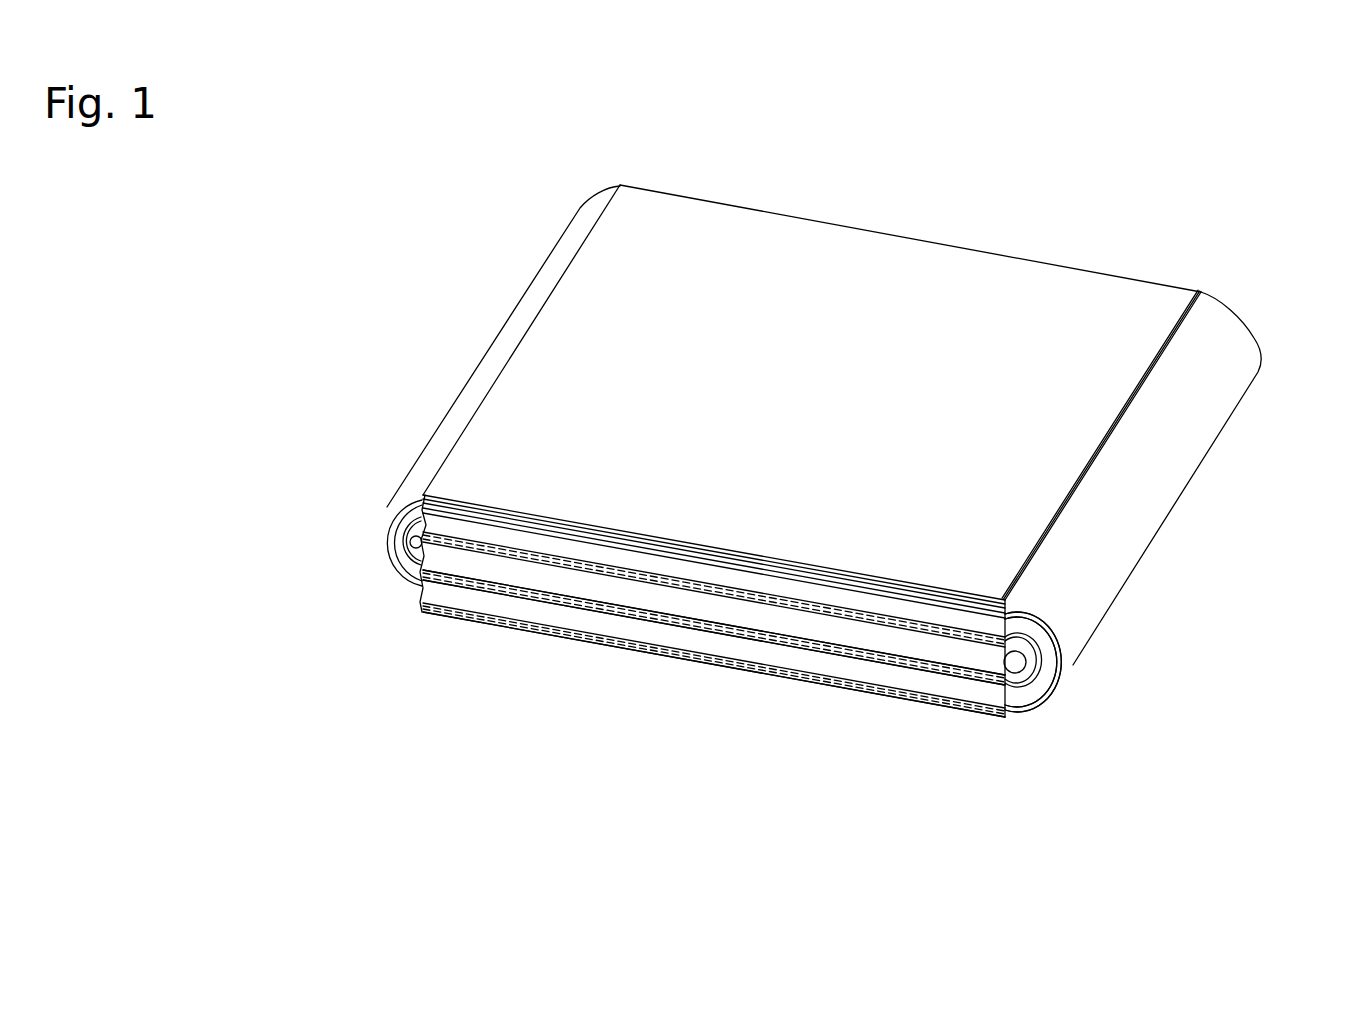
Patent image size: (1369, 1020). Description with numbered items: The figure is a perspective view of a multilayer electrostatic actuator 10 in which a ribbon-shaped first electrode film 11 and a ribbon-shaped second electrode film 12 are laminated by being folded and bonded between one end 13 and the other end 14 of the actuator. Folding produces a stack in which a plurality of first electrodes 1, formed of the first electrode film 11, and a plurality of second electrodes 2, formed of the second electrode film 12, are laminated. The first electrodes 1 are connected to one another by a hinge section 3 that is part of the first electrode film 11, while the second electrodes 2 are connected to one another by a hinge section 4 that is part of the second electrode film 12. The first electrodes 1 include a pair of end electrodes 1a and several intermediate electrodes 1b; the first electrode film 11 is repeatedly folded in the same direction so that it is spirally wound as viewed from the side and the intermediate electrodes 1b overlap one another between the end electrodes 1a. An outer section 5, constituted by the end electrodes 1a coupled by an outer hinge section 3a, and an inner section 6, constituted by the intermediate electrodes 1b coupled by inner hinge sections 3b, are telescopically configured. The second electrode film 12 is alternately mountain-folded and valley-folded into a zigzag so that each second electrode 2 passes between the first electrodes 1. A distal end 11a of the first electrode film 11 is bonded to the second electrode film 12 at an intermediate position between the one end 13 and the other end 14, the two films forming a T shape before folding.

The first electrodes 1 is at (714, 662).
The end electrodes 1a is at (677, 548).
The intermediate electrodes 1b is at (735, 597).
The second electrodes 2 is at (461, 520).
The hinge section 3 is at (744, 597).
The outer hinge section 3a is at (403, 494).
The inner hinge sections 3b is at (410, 545).
The hinge section 4 is at (952, 618).
The outer section 5 is at (1060, 698).
The inner section 6 is at (1028, 700).
The electrostatic actuator 10 is at (1264, 244).
The first electrode film 11 is at (1243, 340).
The distal end 11a is at (1022, 672).
The second electrode film 12 is at (862, 670).
The one end 13 is at (697, 224).
The other end 14 is at (536, 627).